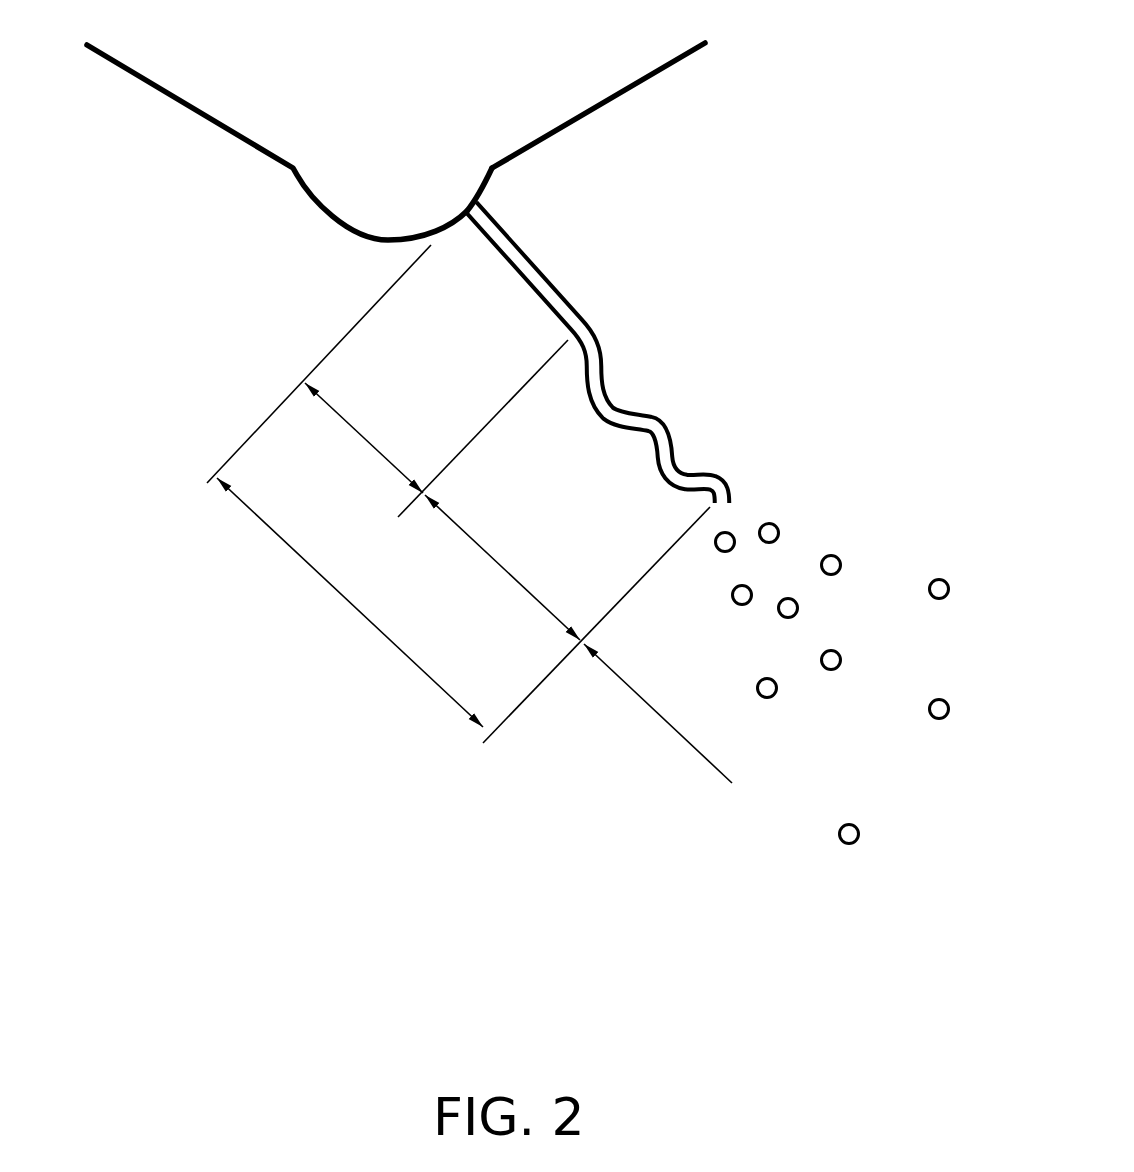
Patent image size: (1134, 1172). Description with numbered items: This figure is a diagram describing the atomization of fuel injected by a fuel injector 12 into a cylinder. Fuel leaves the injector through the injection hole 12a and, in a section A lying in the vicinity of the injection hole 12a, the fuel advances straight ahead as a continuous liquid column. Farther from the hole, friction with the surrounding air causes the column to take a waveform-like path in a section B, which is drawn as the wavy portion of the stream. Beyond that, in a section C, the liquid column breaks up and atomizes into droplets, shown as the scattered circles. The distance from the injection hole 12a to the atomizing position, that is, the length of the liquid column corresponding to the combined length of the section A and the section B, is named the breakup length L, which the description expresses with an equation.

The nozzle 12 is at (206, 152).
The injection hole 12a is at (478, 204).
The section A is at (375, 438).
The section B is at (503, 567).
The section C is at (658, 713).
The breakup length L is at (350, 602).